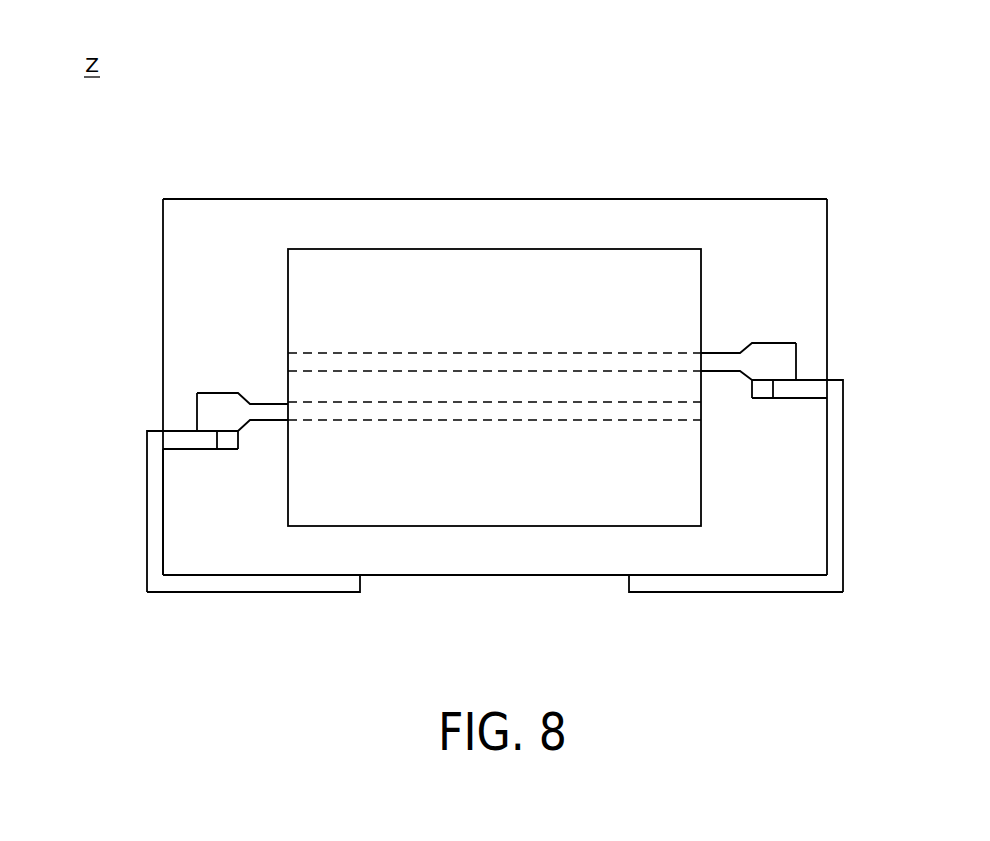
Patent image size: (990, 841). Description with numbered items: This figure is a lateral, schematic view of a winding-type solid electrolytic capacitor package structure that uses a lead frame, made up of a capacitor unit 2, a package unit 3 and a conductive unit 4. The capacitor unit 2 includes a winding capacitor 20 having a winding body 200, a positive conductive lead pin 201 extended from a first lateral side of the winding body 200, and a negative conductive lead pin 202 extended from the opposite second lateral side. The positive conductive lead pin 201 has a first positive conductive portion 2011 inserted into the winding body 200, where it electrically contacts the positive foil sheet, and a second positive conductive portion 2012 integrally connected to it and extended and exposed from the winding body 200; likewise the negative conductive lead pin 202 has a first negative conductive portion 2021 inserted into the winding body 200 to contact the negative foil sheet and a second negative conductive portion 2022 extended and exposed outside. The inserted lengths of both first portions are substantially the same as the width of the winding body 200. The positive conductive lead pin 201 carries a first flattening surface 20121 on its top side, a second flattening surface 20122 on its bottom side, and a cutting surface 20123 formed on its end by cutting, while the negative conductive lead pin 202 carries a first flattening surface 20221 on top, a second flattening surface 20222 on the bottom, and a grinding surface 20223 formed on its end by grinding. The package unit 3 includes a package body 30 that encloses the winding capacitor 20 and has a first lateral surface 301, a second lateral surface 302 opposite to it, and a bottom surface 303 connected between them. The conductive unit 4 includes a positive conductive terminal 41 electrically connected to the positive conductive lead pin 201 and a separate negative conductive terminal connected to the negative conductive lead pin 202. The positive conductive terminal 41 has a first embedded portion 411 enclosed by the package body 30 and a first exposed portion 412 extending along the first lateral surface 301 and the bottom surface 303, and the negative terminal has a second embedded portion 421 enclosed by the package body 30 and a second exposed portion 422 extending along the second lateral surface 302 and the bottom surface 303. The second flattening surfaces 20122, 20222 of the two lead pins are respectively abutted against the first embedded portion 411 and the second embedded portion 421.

The capacitor unit 2 is at (622, 151).
The winding capacitor 20 is at (604, 236).
The winding body 200 is at (407, 262).
The positive conductive lead pin 201 is at (323, 144).
The first positive conductive portion 2011 is at (323, 415).
The second positive conductive portion 2012 is at (228, 410).
The first flattening surface 20121 is at (214, 394).
The second flattening surface 20122 is at (217, 433).
The cutting surface 20123 is at (197, 409).
The negative conductive lead pin 202 is at (777, 144).
The first negative conductive portion 2021 is at (661, 365).
The second negative conductive portion 2022 is at (760, 355).
The first flattening surface 20221 is at (780, 343).
The second flattening surface 20222 is at (773, 398).
The grinding surface 20223 is at (797, 360).
The package unit 3 is at (498, 106).
The package body 30 is at (482, 186).
The first lateral surface 301 is at (163, 271).
The second lateral surface 302 is at (827, 268).
The bottom surface 303 is at (409, 576).
The conductive unit 4 is at (856, 488).
The positive conductive terminal 41 is at (277, 654).
The first embedded portion 411 is at (187, 441).
The first exposed portion 412 is at (258, 582).
The second embedded portion 421 is at (805, 390).
The second exposed portion 422 is at (730, 582).